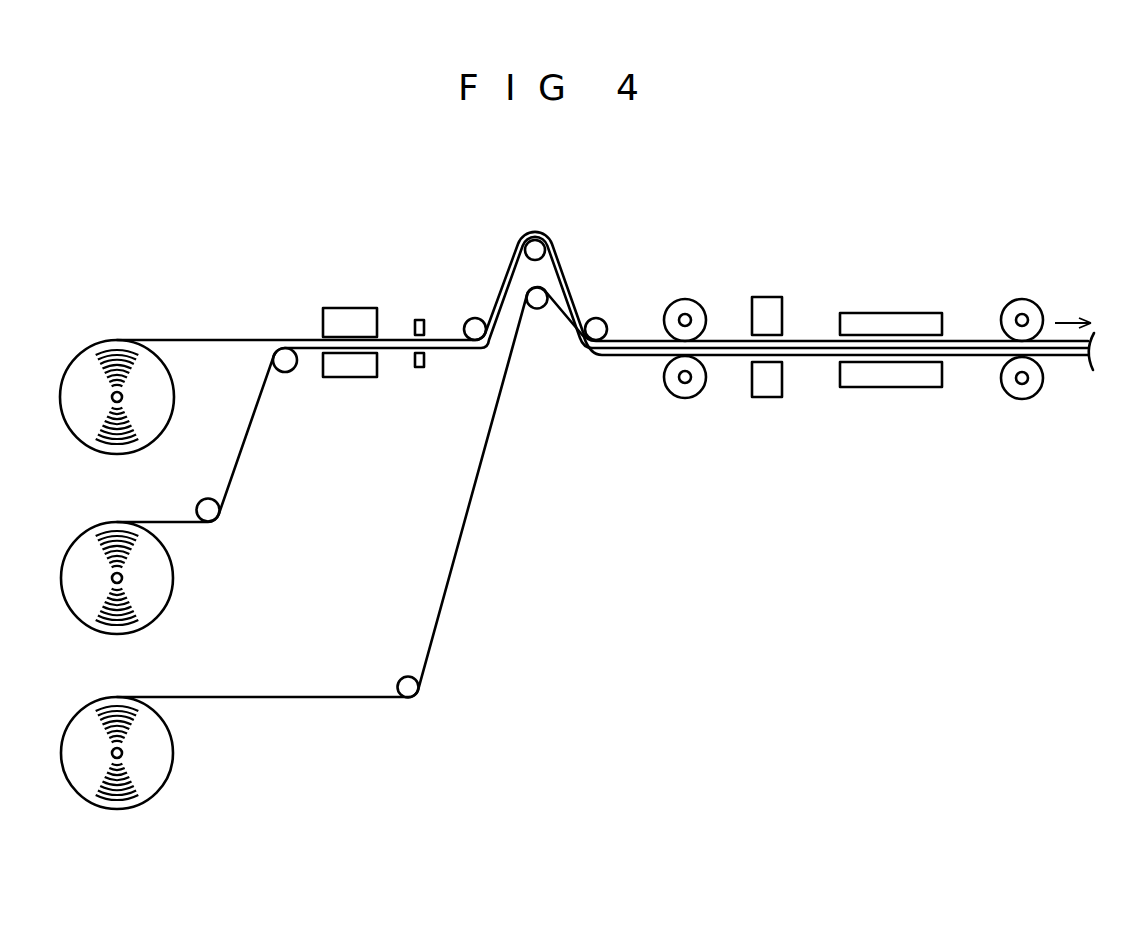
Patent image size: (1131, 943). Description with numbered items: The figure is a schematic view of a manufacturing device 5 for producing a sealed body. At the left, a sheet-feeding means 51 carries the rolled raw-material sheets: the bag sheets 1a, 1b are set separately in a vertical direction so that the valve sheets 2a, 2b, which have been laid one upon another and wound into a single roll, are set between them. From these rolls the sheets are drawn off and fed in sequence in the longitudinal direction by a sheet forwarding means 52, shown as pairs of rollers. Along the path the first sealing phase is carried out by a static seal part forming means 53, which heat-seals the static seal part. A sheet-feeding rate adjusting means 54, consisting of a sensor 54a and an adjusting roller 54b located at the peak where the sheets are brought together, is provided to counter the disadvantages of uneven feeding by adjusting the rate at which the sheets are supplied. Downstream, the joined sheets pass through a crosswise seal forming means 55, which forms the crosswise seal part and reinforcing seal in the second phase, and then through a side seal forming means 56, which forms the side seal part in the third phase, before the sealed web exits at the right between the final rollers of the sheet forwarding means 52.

The manufacturing device 5 is at (612, 543).
The sheet-feeding means 51 is at (105, 328).
The bag sheet 1a is at (160, 390).
The valve sheet 2a is at (182, 578).
The valve sheet 2b is at (158, 565).
The bag sheet 1b is at (158, 745).
The sheet forwarding means 52 is at (700, 395).
The static seal part forming means 53 is at (345, 315).
The sheet-feeding rate adjusting means 54 is at (352, 190).
The sensor 54a is at (417, 320).
The adjusting roller 54b is at (513, 240).
The crosswise seal forming means 55 is at (767, 397).
The side seal forming means 56 is at (893, 387).